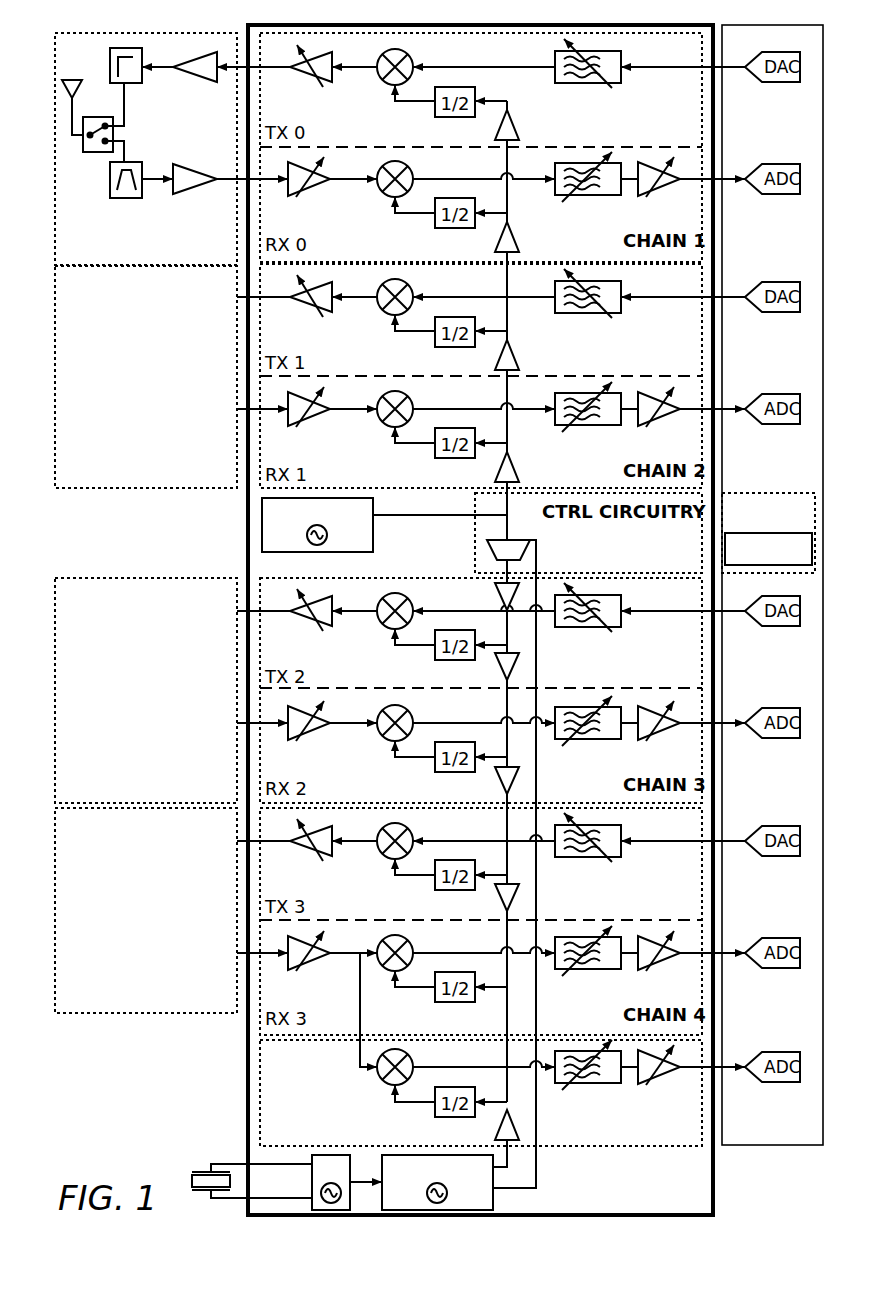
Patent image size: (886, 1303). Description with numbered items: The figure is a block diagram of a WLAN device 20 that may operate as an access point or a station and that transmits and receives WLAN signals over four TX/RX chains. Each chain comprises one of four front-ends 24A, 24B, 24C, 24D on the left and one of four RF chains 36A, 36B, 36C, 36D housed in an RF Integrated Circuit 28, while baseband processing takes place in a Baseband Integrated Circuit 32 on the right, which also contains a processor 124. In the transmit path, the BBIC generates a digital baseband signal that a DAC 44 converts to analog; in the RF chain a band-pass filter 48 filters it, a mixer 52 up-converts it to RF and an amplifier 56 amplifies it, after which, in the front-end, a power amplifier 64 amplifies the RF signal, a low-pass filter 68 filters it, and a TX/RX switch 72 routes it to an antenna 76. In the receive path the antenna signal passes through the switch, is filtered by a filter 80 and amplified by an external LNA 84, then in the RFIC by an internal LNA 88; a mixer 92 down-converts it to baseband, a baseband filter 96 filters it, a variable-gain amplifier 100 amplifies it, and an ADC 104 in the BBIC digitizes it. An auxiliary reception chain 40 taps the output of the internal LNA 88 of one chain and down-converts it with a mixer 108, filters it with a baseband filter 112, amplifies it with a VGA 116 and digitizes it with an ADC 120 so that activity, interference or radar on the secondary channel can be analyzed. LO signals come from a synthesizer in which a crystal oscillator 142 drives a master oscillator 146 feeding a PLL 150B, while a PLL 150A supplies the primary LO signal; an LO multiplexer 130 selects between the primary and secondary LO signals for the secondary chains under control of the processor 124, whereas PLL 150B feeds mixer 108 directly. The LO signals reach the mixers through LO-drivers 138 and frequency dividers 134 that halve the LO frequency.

The WLAN device 20 is at (122, 1084).
The front-end 24A is at (146, 149).
The front-end 24B is at (146, 377).
The front-end 24C is at (146, 690).
The front-end 24D is at (146, 910).
The RF Integrated Circuit 28 is at (248, 1108).
The Baseband Integrated Circuit 32 is at (780, 1145).
The RF chain 36A is at (481, 147).
The RF chain 36B is at (481, 376).
The RF chain 36C is at (481, 690).
The RF chain 36D is at (481, 921).
The auxiliary reception chain 40 is at (260, 1060).
The Digital to Analog Converter 44 is at (778, 83).
The Band-Pass Filter 48 is at (596, 84).
The mixer 52 is at (390, 86).
The amplifier 56 is at (328, 86).
The Power Amplifier 64 is at (205, 83).
The Low-Pass Filter 68 is at (142, 82).
The TX/RX switch 72 is at (90, 152).
The antenna 76 is at (74, 78).
The filter 80 is at (142, 164).
The Low-Noise Amplifier 84 is at (205, 165).
The internal LNA 88 is at (322, 187).
The mixer 92 is at (390, 198).
The baseband filter 96 is at (596, 196).
The Variable-Gain Amplifier 100 is at (674, 185).
The Analog-to-Digital Converter 104 is at (780, 195).
The mixer 108 is at (388, 1086).
The baseband filter 112 is at (596, 1084).
The Variable-Gain Amplifier 116 is at (674, 1073).
The Analog-to-Digital Converter 120 is at (790, 1083).
The processor 124 is at (752, 533).
The LO multiplexer 130 is at (487, 548).
The frequency divider 134 is at (446, 117).
The LO-driver 138 is at (519, 124).
The crystal oscillator 142 is at (192, 1180).
The master oscillator 146 is at (331, 1155).
The Phase Locked Loop 150A is at (262, 515).
The Phase Locked Loop 150B is at (493, 1197).